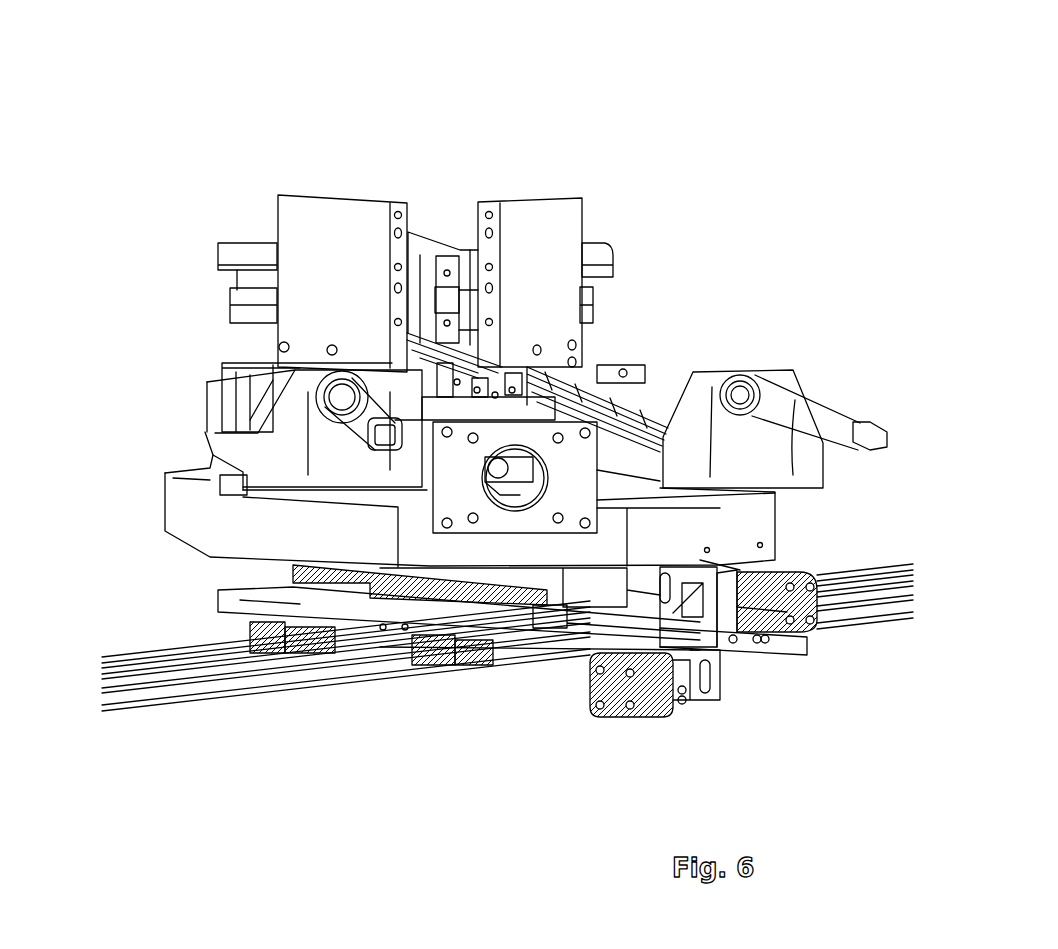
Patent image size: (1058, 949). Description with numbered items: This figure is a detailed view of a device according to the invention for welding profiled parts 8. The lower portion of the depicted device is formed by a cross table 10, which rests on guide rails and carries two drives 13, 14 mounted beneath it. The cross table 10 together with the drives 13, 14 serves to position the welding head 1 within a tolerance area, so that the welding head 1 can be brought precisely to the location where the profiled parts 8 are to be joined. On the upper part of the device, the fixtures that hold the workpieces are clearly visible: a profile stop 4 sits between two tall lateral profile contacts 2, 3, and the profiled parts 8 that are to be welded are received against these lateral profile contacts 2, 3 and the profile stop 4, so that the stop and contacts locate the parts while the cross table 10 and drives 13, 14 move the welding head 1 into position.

The welding head 1 is at (722, 83).
The lateral profile contact 2 is at (535, 245).
The lateral profile contact 3 is at (355, 228).
The profile stop 4 is at (427, 270).
The profiled parts 8 is at (238, 252).
The cross table 10 is at (800, 544).
The drive 13 is at (815, 625).
The drive 14 is at (590, 705).